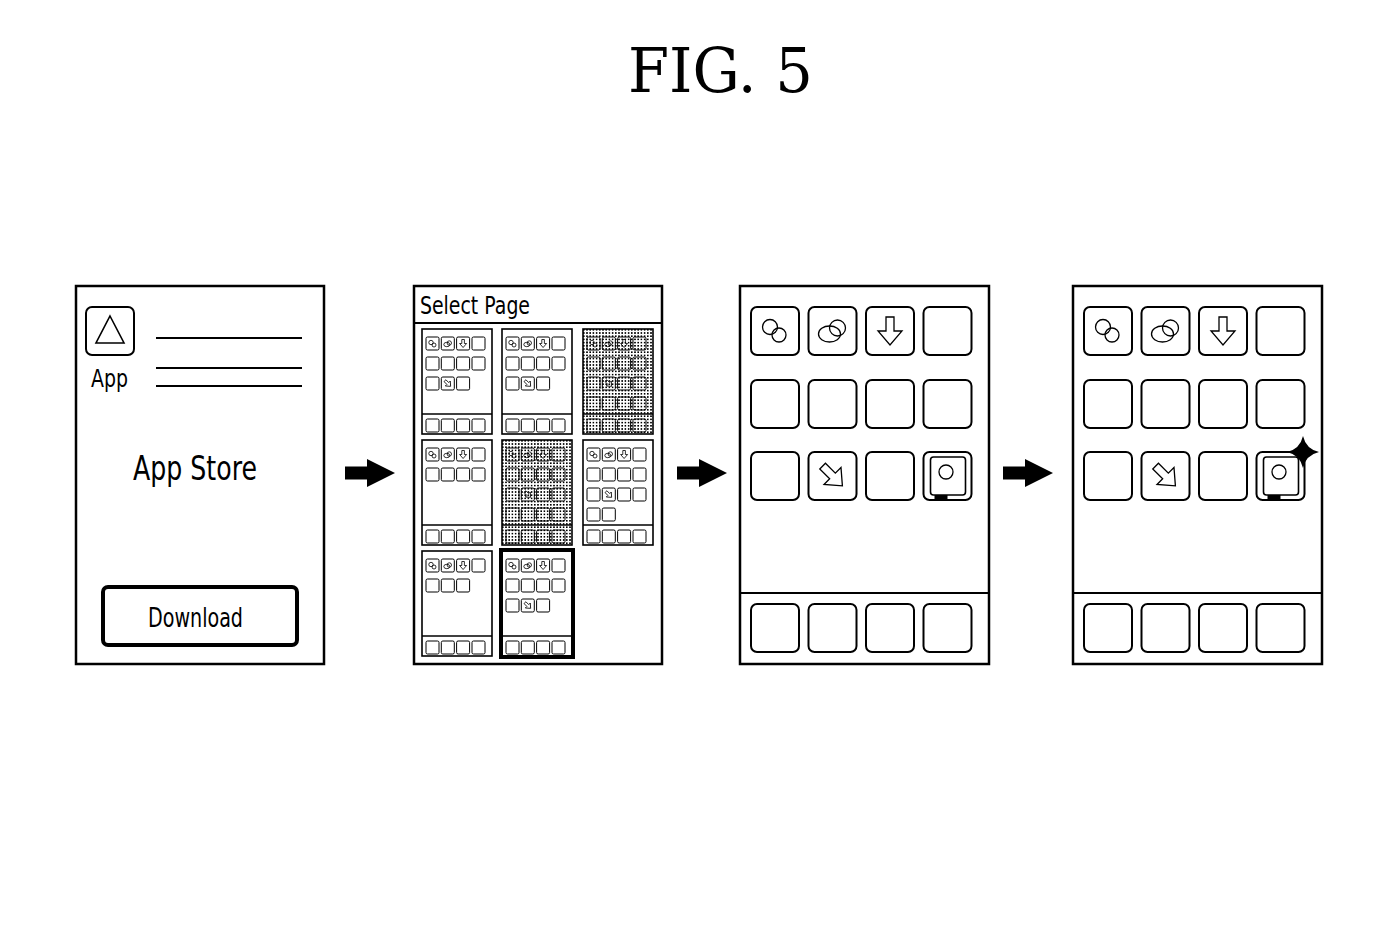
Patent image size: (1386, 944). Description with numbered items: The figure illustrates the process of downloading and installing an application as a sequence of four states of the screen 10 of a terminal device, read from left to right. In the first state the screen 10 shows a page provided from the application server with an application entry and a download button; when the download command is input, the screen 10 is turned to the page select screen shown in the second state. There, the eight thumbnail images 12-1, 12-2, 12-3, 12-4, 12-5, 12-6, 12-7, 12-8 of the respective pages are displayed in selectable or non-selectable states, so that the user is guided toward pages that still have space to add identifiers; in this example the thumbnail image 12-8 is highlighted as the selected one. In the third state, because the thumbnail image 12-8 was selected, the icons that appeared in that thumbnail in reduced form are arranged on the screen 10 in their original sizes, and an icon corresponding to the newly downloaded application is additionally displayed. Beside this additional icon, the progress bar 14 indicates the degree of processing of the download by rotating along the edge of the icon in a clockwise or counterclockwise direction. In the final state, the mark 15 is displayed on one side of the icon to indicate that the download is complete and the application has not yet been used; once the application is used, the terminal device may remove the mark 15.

The screen 10 is at (297, 286).
The thumbnail image 12-1 is at (422, 393).
The thumbnail image 12-2 is at (552, 330).
The thumbnail image 12-3 is at (652, 336).
The thumbnail image 12-4 is at (422, 514).
The thumbnail image 12-5 is at (573, 441).
The thumbnail image 12-6 is at (652, 445).
The thumbnail image 12-7 is at (422, 608).
The thumbnail image 12-8 is at (533, 656).
The progress bar 14 is at (968, 454).
The mark 15 is at (1312, 450).